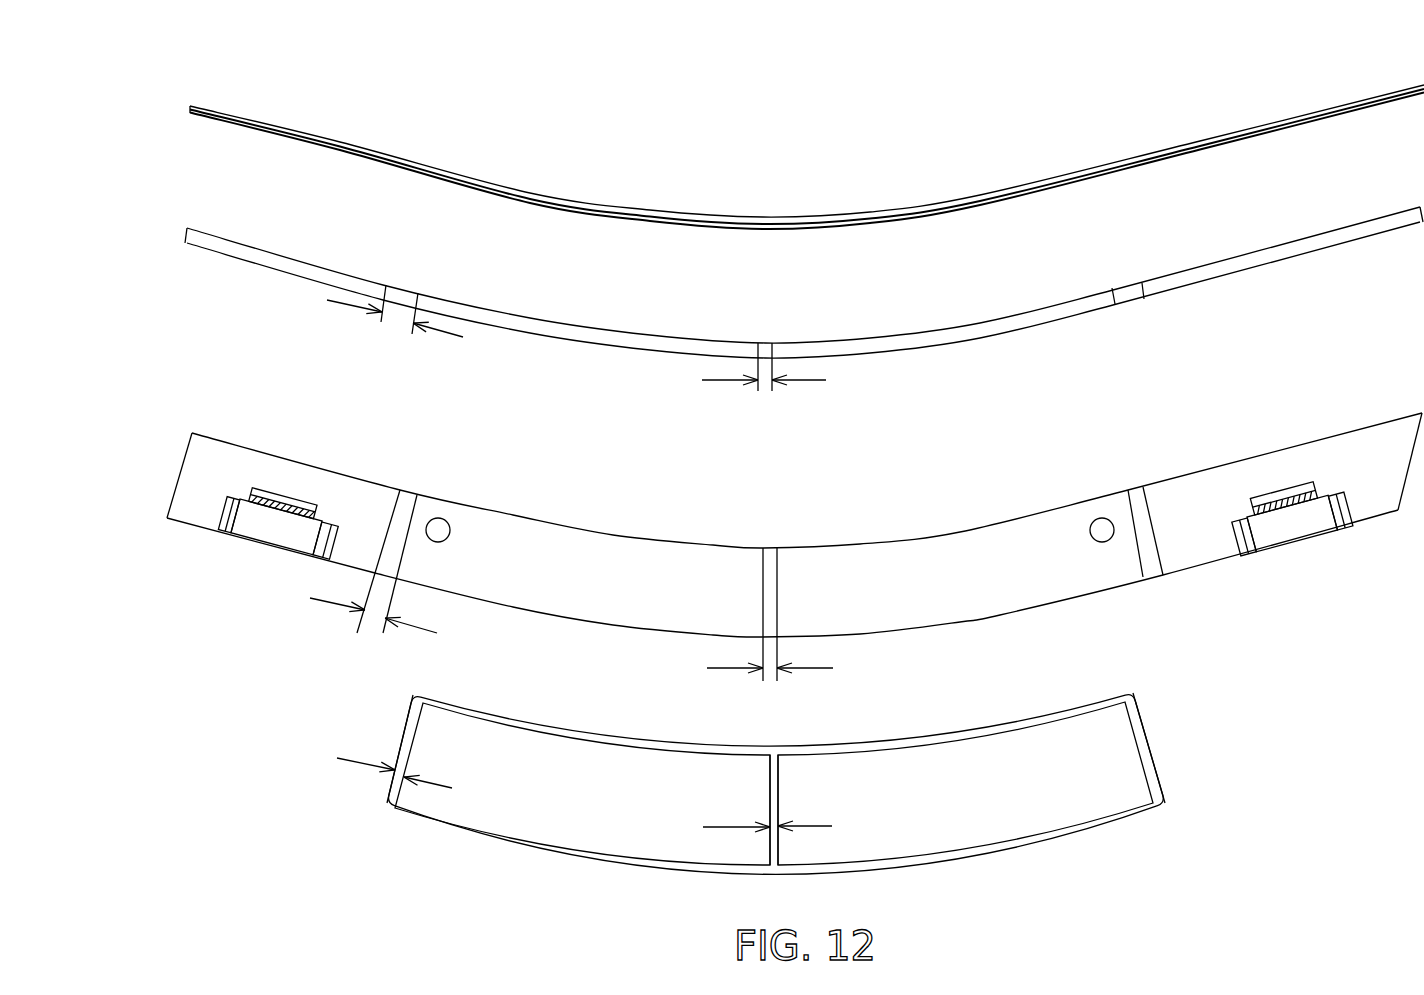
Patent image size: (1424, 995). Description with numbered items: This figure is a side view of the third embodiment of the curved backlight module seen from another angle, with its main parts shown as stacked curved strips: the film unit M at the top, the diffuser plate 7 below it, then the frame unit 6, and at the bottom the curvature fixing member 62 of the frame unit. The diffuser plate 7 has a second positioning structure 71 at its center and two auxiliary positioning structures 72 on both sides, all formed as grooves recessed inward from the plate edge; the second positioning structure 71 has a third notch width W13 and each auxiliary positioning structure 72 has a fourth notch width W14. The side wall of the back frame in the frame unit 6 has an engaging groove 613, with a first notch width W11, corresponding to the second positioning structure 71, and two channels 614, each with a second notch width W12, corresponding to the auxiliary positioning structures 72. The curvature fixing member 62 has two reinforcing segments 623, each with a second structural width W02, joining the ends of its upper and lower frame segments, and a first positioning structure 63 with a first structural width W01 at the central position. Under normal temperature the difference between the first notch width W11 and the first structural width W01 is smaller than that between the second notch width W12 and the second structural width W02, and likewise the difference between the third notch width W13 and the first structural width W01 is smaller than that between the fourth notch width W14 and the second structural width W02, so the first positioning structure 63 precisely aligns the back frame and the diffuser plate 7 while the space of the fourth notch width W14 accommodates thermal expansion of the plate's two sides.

The film unit M is at (187, 104).
The diffuser plate 7 is at (183, 236).
The auxiliary positioning structure 72 is at (402, 293).
The second positioning structure 71 is at (765, 347).
The fourth notch width W14 is at (395, 336).
The third notch width W13 is at (764, 407).
The frame unit 6 is at (183, 434).
The channel 614 is at (408, 492).
The engaging groove 613 is at (774, 548).
The second notch width W12 is at (373, 635).
The first notch width W11 is at (770, 696).
The curvature fixing member 62 is at (1177, 819).
The reinforcing segment 623 is at (387, 792).
The first positioning structure 63 is at (774, 873).
The second structural width W02 is at (426, 782).
The first structural width W01 is at (800, 827).